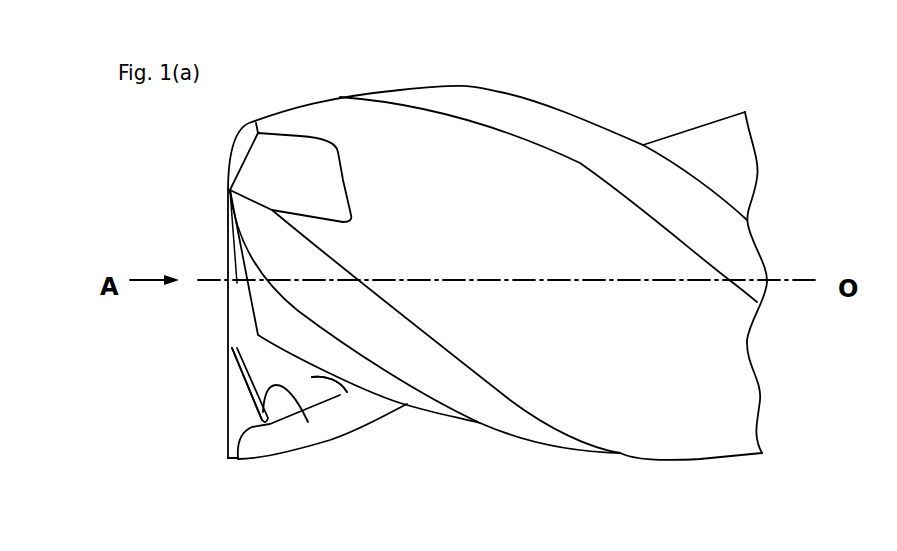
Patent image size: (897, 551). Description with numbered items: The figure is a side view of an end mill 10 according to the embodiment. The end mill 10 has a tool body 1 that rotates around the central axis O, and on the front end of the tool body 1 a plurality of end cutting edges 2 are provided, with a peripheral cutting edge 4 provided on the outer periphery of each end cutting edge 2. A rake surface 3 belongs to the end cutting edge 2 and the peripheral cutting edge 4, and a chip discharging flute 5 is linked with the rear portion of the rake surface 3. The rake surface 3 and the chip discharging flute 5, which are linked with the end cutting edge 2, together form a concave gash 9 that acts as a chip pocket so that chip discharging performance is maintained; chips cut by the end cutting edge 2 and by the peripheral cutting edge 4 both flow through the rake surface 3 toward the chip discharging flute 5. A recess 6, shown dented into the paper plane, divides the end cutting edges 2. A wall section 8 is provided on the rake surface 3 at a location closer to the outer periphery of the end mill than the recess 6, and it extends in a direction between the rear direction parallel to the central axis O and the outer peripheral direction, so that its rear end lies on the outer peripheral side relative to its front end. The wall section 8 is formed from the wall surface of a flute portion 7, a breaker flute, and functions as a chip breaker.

The tool body 1 is at (732, 377).
The end cutting edge 2 is at (230, 412).
The rake surface 3 is at (347, 392).
The gash 9 is at (378, 453).
The peripheral cutting edge 4 is at (233, 462).
The chip discharging flute 5 is at (393, 200).
The recess 6 is at (230, 360).
The flute portion 7 is at (232, 383).
The wall section 8 is at (308, 422).
The end mill 10 is at (512, 287).